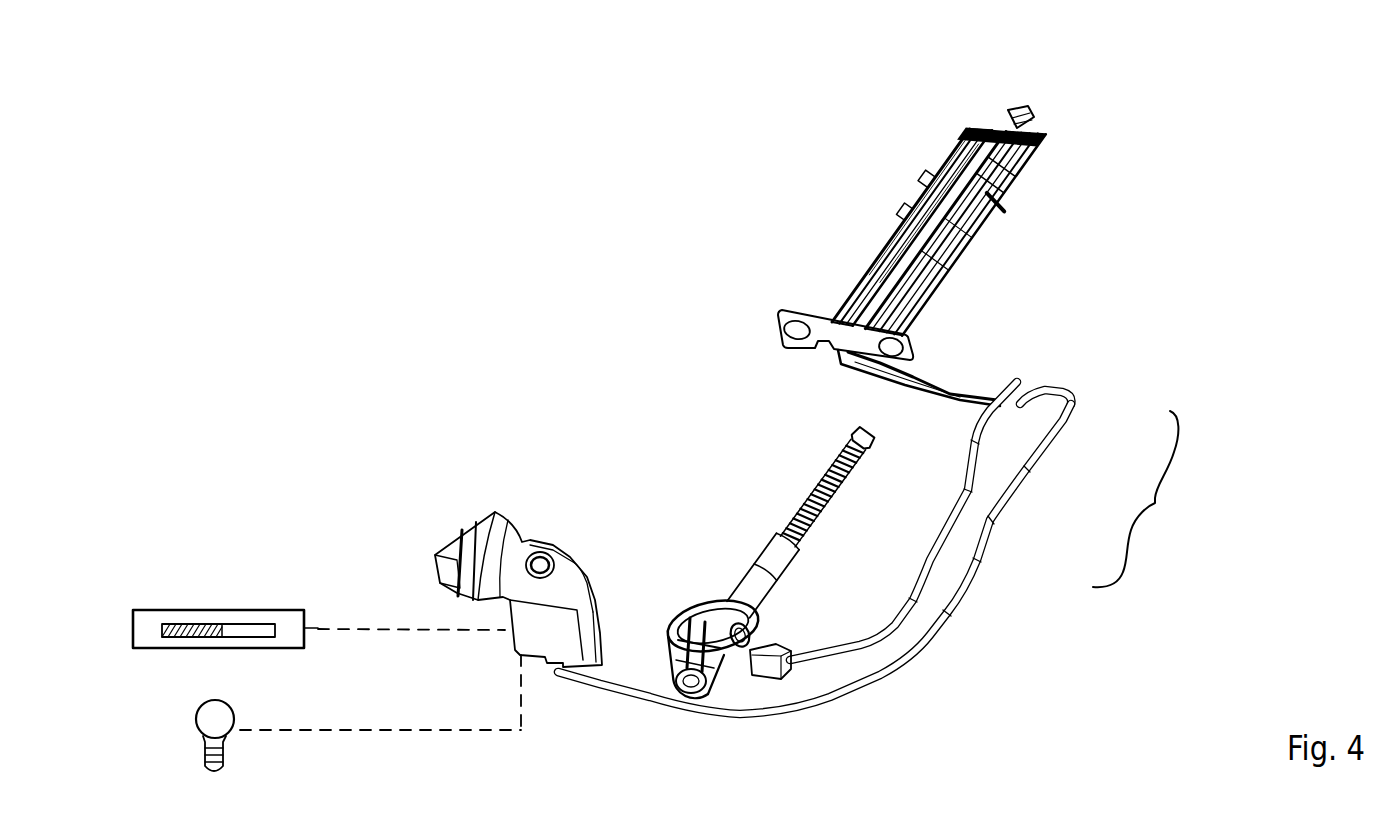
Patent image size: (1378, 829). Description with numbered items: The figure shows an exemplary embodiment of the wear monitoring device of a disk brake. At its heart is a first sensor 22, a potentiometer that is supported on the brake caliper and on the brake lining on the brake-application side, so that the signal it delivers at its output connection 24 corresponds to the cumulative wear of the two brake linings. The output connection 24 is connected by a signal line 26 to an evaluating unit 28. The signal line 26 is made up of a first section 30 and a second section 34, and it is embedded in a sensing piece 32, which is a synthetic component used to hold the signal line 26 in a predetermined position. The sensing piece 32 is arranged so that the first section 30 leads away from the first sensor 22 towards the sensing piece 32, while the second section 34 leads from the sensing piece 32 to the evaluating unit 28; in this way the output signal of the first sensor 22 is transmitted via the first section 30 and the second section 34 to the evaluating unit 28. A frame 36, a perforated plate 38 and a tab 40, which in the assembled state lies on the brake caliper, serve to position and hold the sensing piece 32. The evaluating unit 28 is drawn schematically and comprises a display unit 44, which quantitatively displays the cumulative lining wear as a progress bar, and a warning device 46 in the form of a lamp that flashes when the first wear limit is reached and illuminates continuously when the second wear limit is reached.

The first sensor 22 is at (740, 527).
The output connection 24 is at (766, 640).
The signal line 26 is at (1148, 499).
The evaluating unit 28 is at (592, 580).
The first section 30 is at (953, 530).
The sensing piece 32 is at (958, 197).
The second section 34 is at (1053, 427).
The frame 36 is at (892, 233).
The perforated plate 38 is at (780, 322).
The tab 40 is at (1026, 105).
The display unit 44 is at (225, 610).
The warning device 46 is at (198, 717).